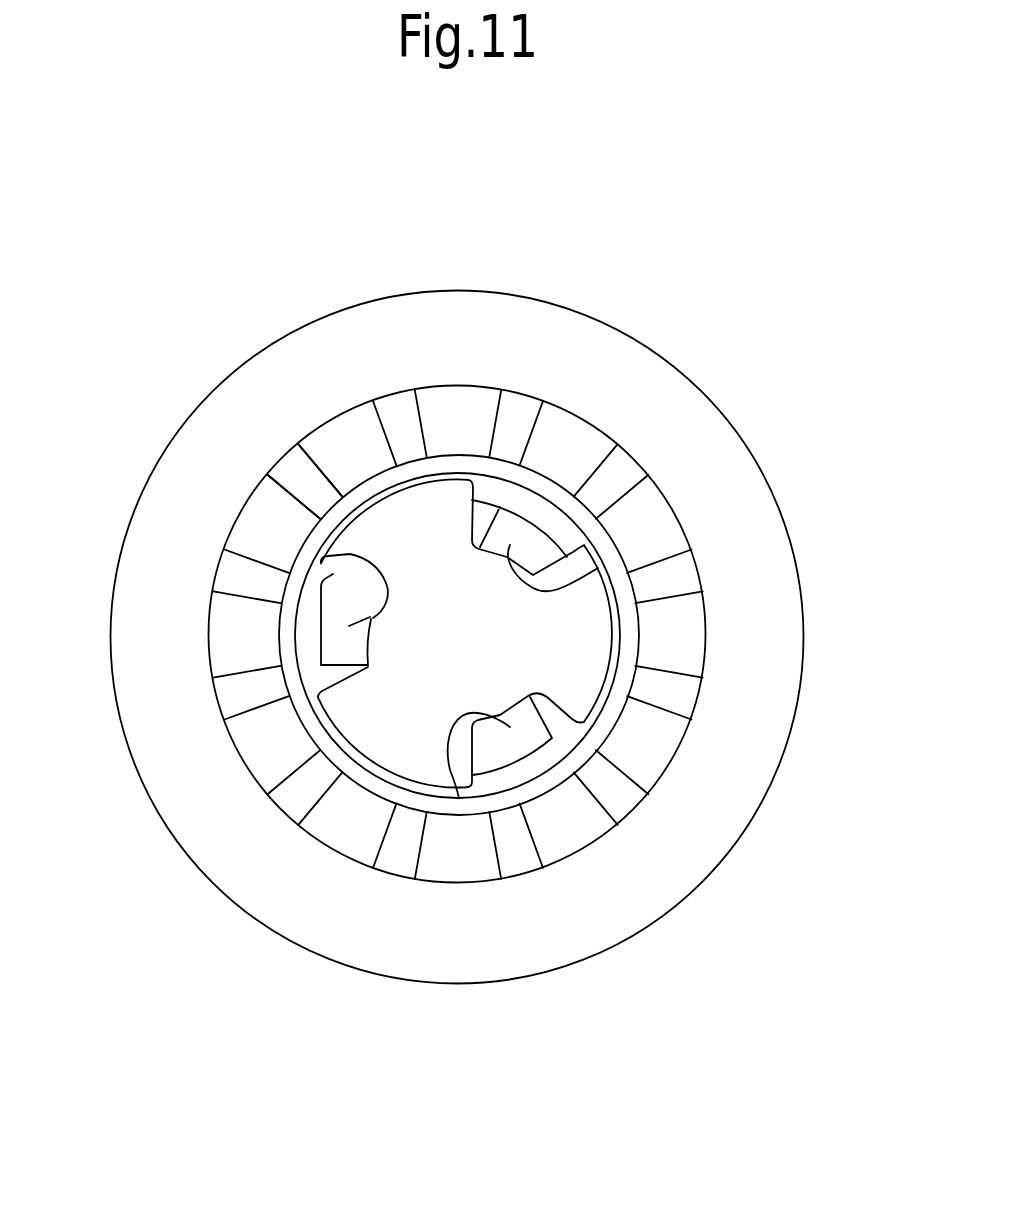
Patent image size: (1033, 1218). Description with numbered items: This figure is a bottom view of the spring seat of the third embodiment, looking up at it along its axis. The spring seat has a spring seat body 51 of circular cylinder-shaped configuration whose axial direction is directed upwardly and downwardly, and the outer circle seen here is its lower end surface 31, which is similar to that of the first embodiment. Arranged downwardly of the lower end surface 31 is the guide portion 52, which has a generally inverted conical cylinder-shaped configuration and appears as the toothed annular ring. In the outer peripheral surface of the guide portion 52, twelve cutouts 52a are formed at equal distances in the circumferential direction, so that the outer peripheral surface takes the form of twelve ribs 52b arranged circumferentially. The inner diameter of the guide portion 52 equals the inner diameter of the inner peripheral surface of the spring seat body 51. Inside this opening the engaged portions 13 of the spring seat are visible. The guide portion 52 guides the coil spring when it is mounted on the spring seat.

The engaged portion 13 is at (598, 568).
The lower end surface 31 is at (517, 637).
The spring seat body 51 is at (743, 535).
The guide portion 52 is at (527, 535).
The cutout 52a is at (404, 423).
The rib 52b is at (455, 405).